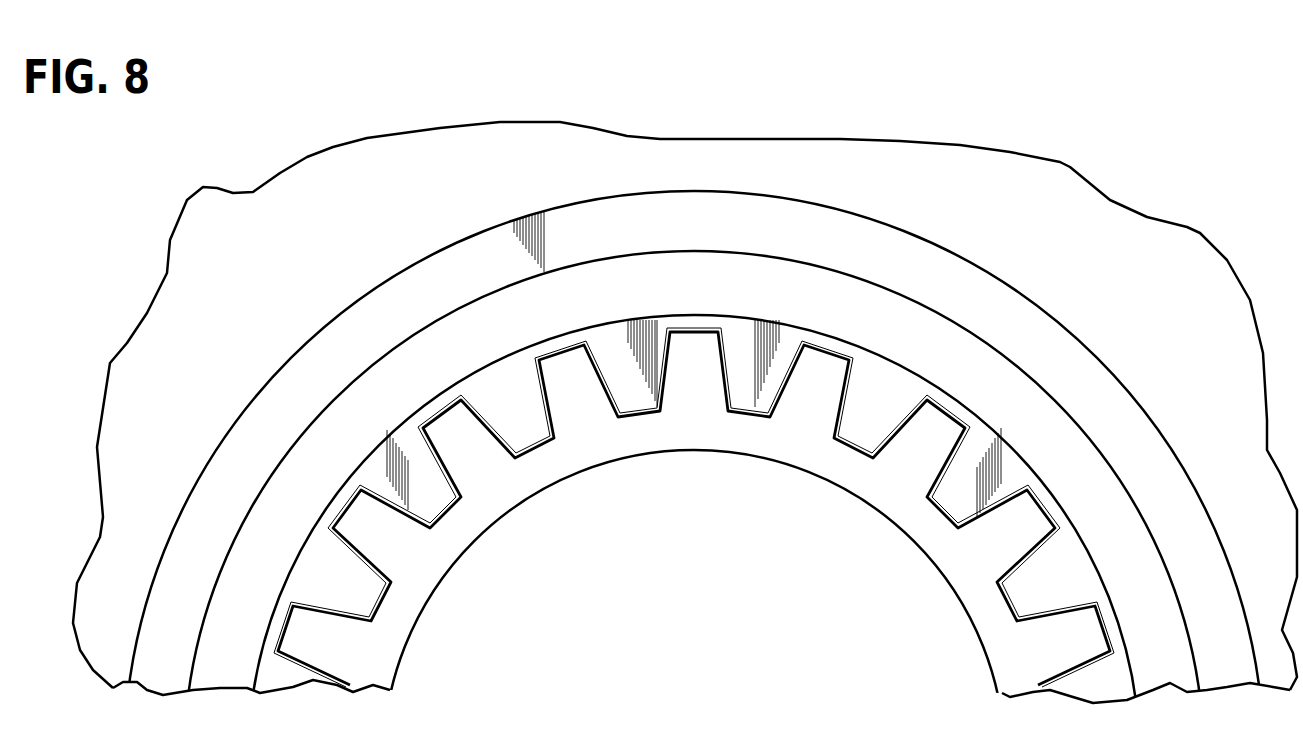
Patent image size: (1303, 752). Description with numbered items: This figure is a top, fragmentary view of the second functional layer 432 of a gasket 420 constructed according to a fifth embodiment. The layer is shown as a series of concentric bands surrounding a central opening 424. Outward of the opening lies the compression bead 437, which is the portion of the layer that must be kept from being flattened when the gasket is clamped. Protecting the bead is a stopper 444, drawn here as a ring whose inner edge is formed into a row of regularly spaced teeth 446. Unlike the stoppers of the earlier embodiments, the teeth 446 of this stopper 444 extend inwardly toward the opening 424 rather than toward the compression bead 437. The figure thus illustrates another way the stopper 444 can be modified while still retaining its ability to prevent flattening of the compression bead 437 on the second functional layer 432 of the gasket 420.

The gasket 420 is at (1013, 122).
The second functional layer 432 is at (1140, 232).
The compression bead 437 is at (1140, 443).
The stopper 444 is at (1000, 601).
The teeth 446 is at (627, 393).
The opening 424 is at (716, 630).